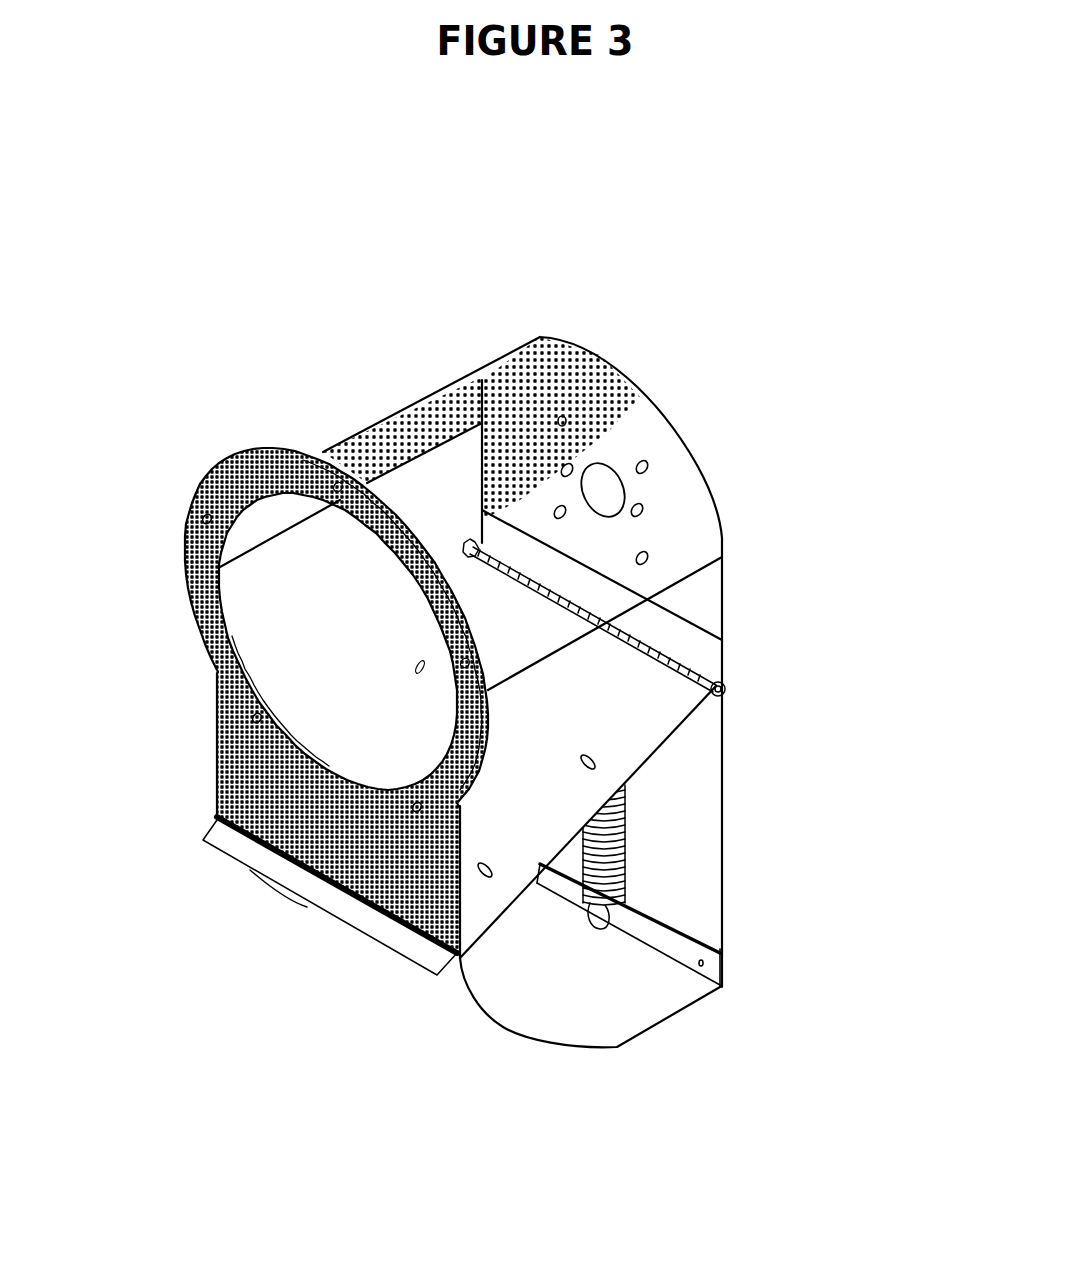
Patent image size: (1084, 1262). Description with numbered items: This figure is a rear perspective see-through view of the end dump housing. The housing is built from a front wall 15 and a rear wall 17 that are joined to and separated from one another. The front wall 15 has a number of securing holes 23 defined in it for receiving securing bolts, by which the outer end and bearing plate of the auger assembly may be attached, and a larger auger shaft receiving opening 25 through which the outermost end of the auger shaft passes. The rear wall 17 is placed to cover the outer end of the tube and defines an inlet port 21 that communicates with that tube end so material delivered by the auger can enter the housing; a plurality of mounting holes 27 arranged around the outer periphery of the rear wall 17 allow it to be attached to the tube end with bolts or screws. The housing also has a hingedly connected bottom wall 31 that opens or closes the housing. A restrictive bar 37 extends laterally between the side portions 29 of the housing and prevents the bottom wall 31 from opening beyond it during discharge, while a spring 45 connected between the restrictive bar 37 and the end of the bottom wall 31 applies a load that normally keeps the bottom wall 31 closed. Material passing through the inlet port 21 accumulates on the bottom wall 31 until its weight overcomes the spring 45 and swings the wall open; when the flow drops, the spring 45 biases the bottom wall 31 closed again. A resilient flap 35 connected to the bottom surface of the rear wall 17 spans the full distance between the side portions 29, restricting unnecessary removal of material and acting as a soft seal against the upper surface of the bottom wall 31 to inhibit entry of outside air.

The front wall 15 is at (687, 493).
The rear wall 17 is at (390, 845).
The inlet port 21 is at (283, 687).
The securing holes 23 is at (564, 418).
The auger shaft receiving opening 25 is at (605, 488).
The mounting holes 27 is at (207, 515).
The side portions 29 is at (622, 1015).
The bottom wall 31 is at (520, 840).
The resilient flap 35 is at (440, 950).
The restrictive bar 37 is at (693, 957).
The spring 45 is at (612, 863).